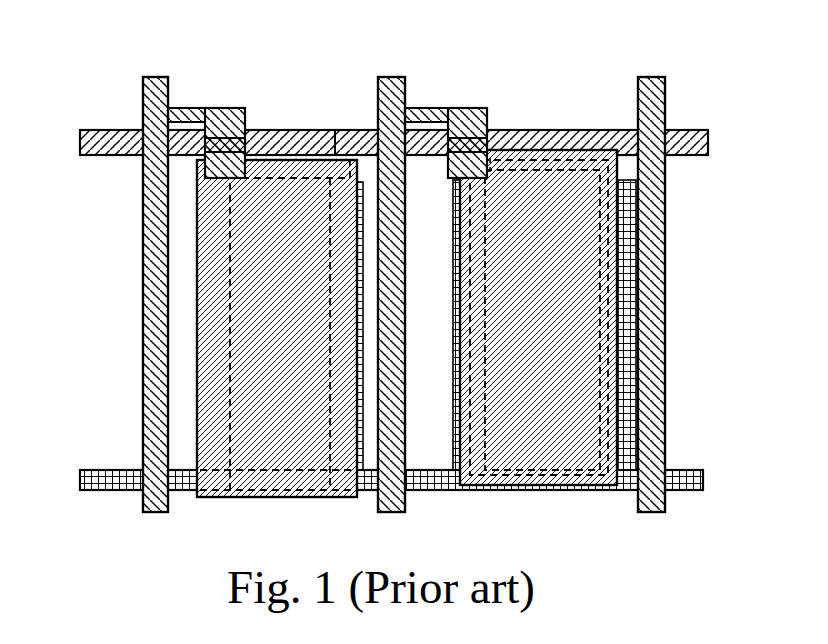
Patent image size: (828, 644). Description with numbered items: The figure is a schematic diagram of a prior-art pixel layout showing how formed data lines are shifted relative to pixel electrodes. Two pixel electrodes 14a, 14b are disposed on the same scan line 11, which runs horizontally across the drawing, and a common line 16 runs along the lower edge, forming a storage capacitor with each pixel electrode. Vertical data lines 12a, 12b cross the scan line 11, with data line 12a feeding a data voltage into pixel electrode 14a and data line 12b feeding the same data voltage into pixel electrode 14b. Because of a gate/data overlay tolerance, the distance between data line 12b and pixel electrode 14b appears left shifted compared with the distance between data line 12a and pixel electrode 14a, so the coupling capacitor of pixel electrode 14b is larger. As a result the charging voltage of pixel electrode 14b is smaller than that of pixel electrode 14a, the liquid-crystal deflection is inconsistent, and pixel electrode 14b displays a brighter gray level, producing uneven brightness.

The scan line 11 is at (80, 140).
The data line 12a is at (153, 93).
The data line 12b is at (391, 93).
The pixel electrode 14a is at (272, 311).
The pixel electrode 14b is at (545, 253).
The common line 16 is at (82, 482).